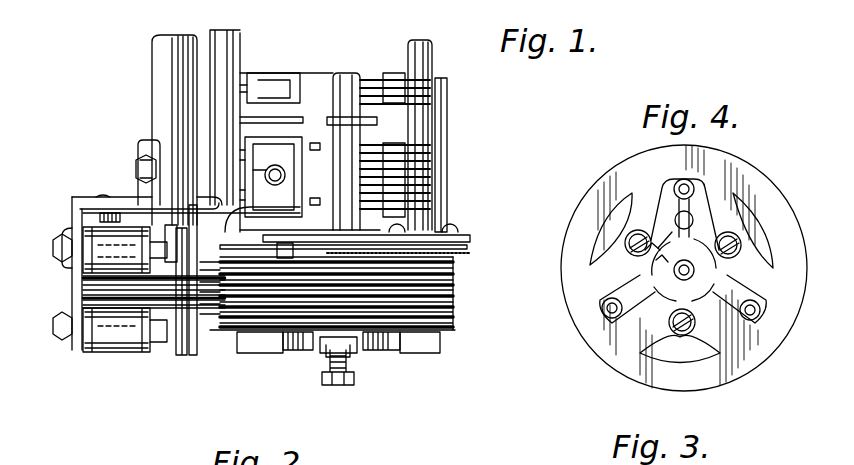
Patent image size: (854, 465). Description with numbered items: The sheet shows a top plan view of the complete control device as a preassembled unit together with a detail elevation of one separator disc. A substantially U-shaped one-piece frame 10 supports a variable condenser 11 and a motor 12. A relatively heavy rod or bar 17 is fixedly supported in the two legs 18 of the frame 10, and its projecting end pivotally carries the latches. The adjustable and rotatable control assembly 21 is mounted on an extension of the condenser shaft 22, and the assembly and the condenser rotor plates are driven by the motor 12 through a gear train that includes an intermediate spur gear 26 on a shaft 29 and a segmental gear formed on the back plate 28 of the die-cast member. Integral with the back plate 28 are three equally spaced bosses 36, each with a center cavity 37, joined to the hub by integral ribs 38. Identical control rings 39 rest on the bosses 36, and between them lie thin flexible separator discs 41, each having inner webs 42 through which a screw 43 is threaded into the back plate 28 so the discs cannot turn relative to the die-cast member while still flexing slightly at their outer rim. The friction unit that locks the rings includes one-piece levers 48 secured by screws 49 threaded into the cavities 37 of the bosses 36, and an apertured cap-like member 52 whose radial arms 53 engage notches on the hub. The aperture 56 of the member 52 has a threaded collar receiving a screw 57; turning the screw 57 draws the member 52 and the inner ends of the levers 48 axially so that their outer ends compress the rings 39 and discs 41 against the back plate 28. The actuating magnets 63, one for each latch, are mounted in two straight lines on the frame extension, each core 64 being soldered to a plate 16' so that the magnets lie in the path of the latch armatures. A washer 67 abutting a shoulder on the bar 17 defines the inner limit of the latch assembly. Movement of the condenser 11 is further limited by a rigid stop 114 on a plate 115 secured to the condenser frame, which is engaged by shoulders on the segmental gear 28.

In FIG. 1, the frame 10 is at (222, 50).
In FIG. 1, the variable condenser 11 is at (327, 76).
In FIG. 1, the motor 12 is at (461, 128).
In FIG. 1, the rod or bar 17 is at (163, 73).
In FIG. 1, the legs 18 is at (103, 210).
In FIG. 1, the plate 16' is at (54, 222).
In FIG. 1, the control assembly 21 is at (474, 319).
In FIG. 1, the condenser shaft 22 is at (355, 95).
In FIG. 1, the intermediate spur gear 26 is at (480, 252).
In FIG. 1, the back plate 28 is at (472, 267).
In FIG. 1, the shaft 29 is at (422, 62).
In FIG. 4, the bosses 36 is at (697, 183).
In FIG. 4, the center cavity 37 is at (680, 181).
In FIG. 4, the ribs 38 is at (735, 292).
In FIG. 1, the control rings 39 is at (462, 285).
In FIG. 1, the separator or friction disc 41 is at (463, 298).
In FIG. 4, the separator or friction disc 41 is at (725, 375).
In FIG. 4, the inner webs 42 is at (722, 212).
In FIG. 1, the screw 43 is at (280, 345).
In FIG. 4, the screw 43 is at (626, 246).
In FIG. 1, the levers 48 is at (255, 343).
In FIG. 1, the screws 49 is at (325, 345).
In FIG. 4, the cap-like member 52 is at (672, 287).
In FIG. 4, the radial arms 53 is at (708, 290).
In FIG. 4, the aperture 56 is at (676, 270).
In FIG. 1, the screw 57 is at (330, 380).
In FIG. 1, the actuating magnets 63 is at (118, 340).
In FIG. 1, the core 64 is at (153, 230).
In FIG. 1, the washer 67 is at (197, 262).
In FIG. 1, the stop 114 is at (285, 246).
In FIG. 1, the plate 115 is at (458, 238).